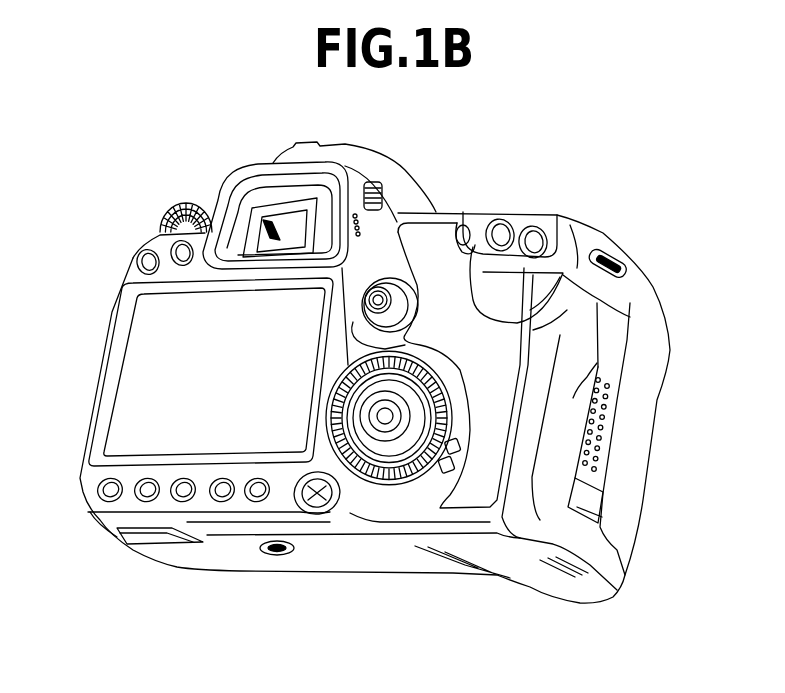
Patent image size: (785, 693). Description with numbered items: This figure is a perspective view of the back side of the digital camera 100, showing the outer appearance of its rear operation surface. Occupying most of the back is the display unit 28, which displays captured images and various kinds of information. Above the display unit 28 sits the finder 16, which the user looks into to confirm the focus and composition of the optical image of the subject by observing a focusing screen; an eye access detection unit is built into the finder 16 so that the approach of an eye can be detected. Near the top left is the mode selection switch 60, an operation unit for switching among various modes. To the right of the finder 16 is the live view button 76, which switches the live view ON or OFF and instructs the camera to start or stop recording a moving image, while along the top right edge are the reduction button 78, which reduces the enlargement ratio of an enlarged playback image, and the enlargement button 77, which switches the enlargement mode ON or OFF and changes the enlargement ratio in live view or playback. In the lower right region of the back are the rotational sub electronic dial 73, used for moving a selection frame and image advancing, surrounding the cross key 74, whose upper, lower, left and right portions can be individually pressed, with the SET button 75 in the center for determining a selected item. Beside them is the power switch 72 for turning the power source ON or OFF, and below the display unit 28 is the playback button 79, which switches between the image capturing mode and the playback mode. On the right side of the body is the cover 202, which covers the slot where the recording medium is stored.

The digital camera 100 is at (625, 222).
The finder 16 is at (280, 238).
The mode selection switch 60 is at (178, 203).
The display unit 28 is at (140, 347).
The live view (LV) button 76 is at (378, 296).
The reduction button 78 is at (500, 232).
The enlargement button 77 is at (531, 240).
The cover 202 is at (597, 366).
The playback button 79 is at (256, 494).
The power switch 72 is at (330, 510).
The sub electronic dial 73 is at (348, 478).
The cross key 74 is at (368, 447).
The SET button 75 is at (384, 414).